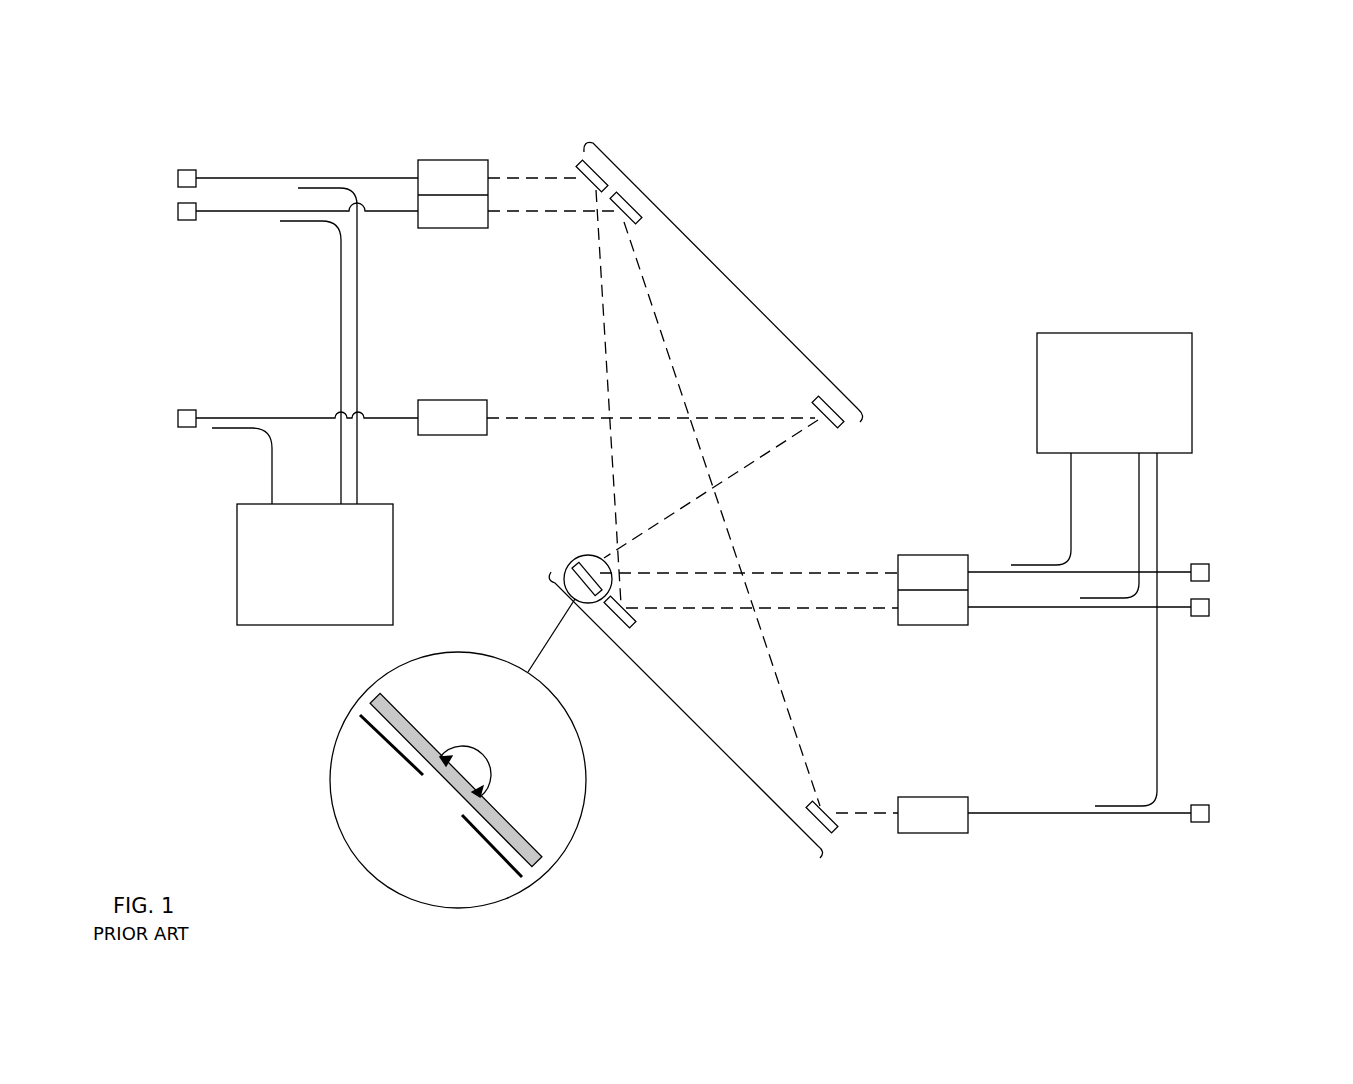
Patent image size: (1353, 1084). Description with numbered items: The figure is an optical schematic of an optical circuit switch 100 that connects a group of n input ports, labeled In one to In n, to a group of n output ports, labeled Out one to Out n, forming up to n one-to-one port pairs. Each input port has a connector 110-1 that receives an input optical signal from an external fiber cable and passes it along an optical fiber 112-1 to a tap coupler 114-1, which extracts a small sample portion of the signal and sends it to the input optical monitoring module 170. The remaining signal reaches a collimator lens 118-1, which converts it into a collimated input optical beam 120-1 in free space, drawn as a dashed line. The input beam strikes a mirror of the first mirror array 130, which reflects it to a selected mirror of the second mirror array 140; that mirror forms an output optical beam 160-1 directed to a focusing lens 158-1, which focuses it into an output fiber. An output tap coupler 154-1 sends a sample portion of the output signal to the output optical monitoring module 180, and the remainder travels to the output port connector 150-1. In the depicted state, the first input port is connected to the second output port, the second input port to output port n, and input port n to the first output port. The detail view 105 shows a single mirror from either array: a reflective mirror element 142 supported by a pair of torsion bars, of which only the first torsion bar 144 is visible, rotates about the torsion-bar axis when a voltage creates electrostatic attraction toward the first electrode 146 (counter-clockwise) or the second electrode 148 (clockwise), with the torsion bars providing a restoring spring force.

The optical circuit switch 100 is at (1123, 108).
The detail view 105 is at (527, 890).
The connector 110-1 is at (187, 168).
The optical fiber 112-1 is at (230, 178).
The tap coupler 114-1 is at (337, 178).
The collimator lens 118-1 is at (440, 160).
The input optical beam 120-1 is at (545, 177).
The first mirror array 130 is at (727, 284).
The second mirror array 140 is at (674, 708).
The mirror element 142 is at (412, 722).
The first torsion bar 144 is at (457, 780).
The first electrode 146 is at (392, 748).
The second electrode 148 is at (493, 847).
The connector 150-1 is at (1200, 565).
The output tap coupler 154-1 is at (1035, 565).
The focusing lens 158-1 is at (933, 555).
The output optical beam 160-1 is at (862, 572).
The input optical monitoring module 170 is at (315, 564).
The output optical monitoring module 180 is at (1114, 393).